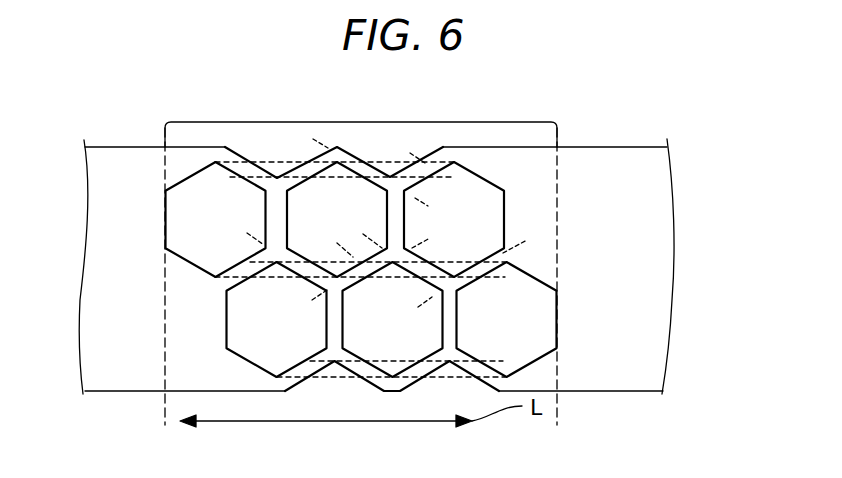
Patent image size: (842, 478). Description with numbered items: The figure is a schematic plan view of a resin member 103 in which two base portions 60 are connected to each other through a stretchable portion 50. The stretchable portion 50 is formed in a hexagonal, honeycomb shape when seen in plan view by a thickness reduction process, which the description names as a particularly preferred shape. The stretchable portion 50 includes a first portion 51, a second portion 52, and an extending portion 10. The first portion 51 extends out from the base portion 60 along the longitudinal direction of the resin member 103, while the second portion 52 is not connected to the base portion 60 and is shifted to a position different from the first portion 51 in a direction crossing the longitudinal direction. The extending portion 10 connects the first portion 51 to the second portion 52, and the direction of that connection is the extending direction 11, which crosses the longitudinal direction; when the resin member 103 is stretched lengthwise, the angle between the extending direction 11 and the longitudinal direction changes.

The extending portion 10 is at (313, 173).
The extending direction 11 is at (410, 242).
The stretchable portion 50 is at (366, 122).
The first portion 51 is at (523, 196).
The second portion 52 is at (273, 212).
The base portion 60 is at (127, 160).
The resin member 103 is at (692, 188).